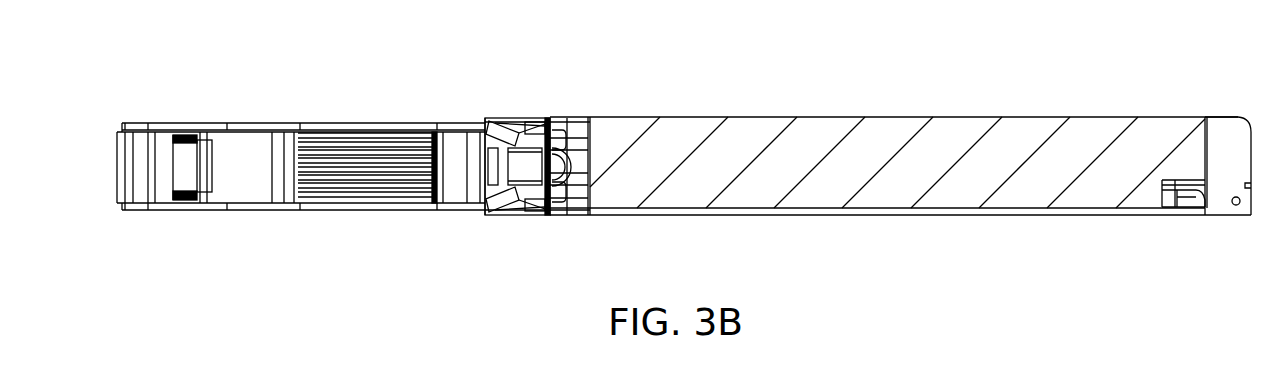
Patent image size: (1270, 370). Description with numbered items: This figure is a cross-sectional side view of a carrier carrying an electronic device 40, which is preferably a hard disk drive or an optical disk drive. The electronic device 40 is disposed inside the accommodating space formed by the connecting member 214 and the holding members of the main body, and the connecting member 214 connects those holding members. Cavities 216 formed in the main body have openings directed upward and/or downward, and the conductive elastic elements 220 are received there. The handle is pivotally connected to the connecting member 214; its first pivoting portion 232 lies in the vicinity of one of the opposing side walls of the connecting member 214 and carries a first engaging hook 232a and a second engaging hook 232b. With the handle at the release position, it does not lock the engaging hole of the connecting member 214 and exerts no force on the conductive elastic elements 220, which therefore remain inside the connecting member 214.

The electronic device 40 is at (895, 126).
The connecting member 214 is at (440, 121).
The cavity 216 is at (503, 118).
The conductive elastic element 220 is at (523, 121).
The first pivoting portion 232 is at (258, 197).
The first engaging hook 232a is at (127, 172).
The second engaging hook 232b is at (208, 170).